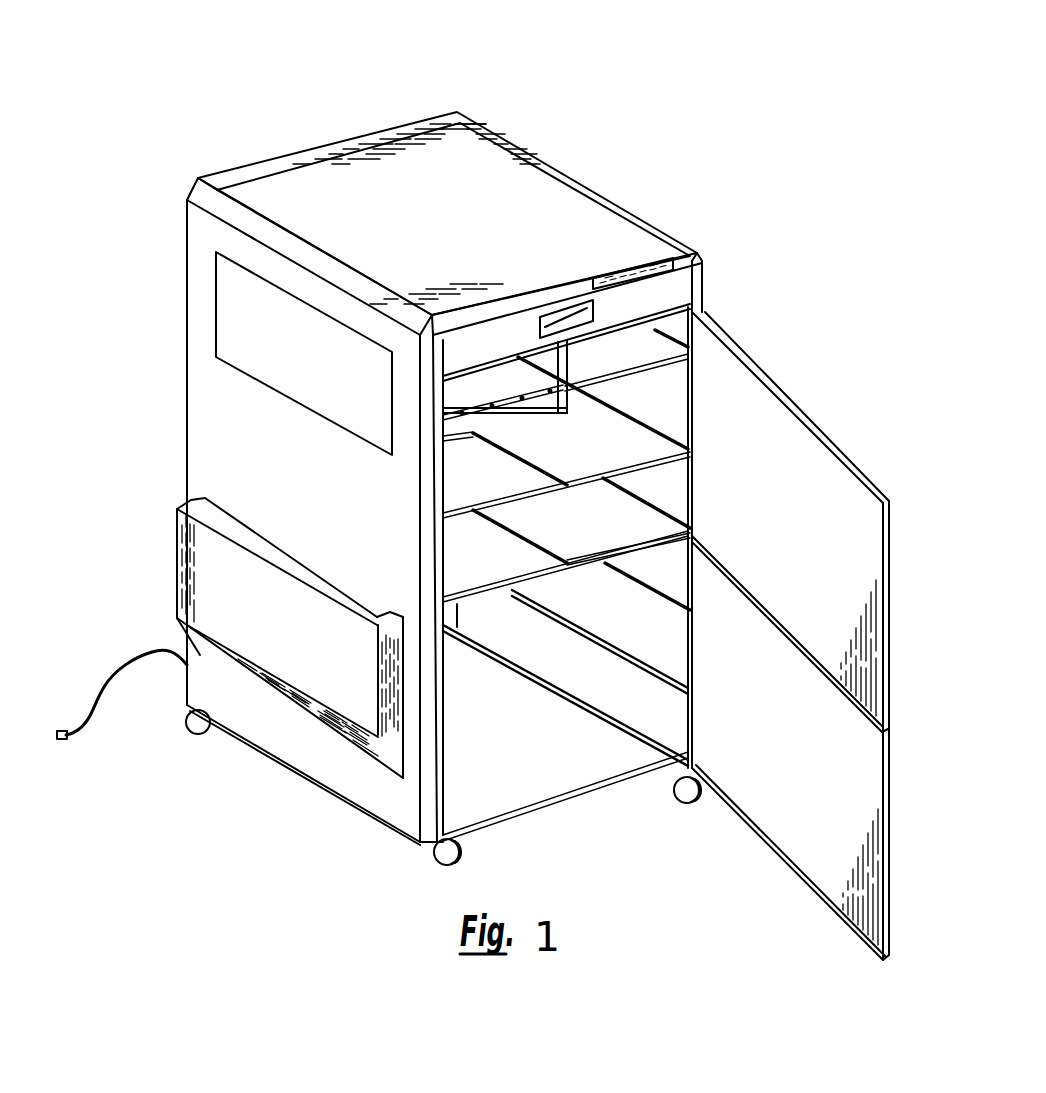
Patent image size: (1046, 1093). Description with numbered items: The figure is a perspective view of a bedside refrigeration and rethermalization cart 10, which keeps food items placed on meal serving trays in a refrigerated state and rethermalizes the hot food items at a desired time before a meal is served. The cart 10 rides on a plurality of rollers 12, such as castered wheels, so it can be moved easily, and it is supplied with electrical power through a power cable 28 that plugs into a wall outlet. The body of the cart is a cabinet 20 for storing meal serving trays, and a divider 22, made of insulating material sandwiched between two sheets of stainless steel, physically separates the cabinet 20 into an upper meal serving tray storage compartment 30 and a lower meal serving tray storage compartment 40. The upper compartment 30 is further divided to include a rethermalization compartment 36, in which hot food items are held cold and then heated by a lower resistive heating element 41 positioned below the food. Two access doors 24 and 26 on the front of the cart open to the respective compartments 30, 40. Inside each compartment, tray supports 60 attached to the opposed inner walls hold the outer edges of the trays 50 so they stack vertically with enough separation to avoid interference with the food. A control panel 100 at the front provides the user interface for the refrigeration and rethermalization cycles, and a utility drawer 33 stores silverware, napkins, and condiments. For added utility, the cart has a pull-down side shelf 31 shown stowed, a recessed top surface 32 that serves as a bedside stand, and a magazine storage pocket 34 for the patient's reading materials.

The refrigeration and rethermalization cart 10 is at (505, 86).
The rollers 12 is at (188, 732).
The cabinet 20 is at (712, 300).
The divider 22 is at (472, 603).
The access door 24 is at (805, 527).
The access door 26 is at (802, 754).
The power cable 28 is at (122, 660).
The upper meal serving tray storage compartment 30 is at (665, 400).
The pull-down side shelf 31 is at (312, 363).
The top surface 32 is at (440, 229).
The utility drawer 33 is at (641, 314).
The magazine storage pocket 34 is at (285, 636).
The rethermalization compartment 36 is at (492, 378).
The lower meal serving tray storage compartment 40 is at (553, 783).
The lower resistive heating element 41 is at (443, 437).
The trays 50 is at (600, 449).
The tray supports 60 is at (633, 578).
The control panel 100 is at (690, 250).